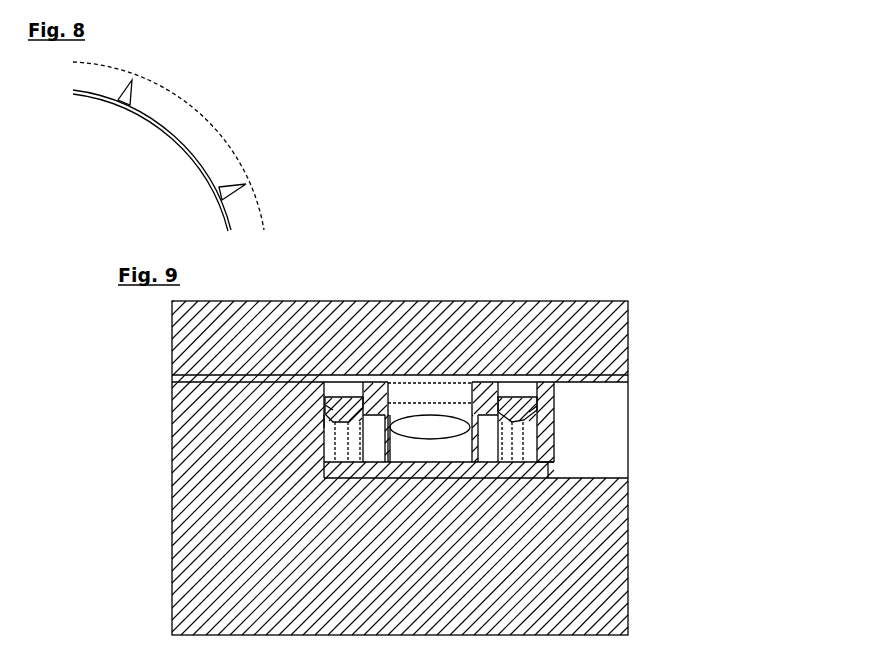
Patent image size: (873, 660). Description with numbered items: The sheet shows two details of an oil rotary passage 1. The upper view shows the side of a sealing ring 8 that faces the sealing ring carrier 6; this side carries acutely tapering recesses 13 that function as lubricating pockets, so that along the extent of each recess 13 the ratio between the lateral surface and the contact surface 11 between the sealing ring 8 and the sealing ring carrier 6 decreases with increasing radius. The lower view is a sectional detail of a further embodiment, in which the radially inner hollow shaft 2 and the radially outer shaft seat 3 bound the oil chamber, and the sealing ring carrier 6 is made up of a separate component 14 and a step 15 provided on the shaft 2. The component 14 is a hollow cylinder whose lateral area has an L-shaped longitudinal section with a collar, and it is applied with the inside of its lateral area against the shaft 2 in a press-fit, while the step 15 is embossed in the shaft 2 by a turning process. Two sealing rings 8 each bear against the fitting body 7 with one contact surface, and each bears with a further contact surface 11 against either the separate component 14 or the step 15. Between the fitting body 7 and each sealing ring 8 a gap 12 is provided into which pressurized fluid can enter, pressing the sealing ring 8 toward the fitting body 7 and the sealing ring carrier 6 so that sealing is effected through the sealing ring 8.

In FIG. 9, the oil rotary passage 1 is at (622, 252).
In FIG. 9, the shaft 2 is at (607, 598).
In FIG. 9, the shaft seat 3 is at (598, 332).
In FIG. 9, the sealing ring carrier 6 is at (548, 468).
In FIG. 9, the fitting body 7 is at (482, 390).
In FIG. 8, the sealing ring 8 is at (193, 128).
In FIG. 9, the sealing ring 8 is at (337, 405).
In FIG. 9, the contact surface 11 is at (325, 405).
In FIG. 9, the gap 12 is at (352, 397).
In FIG. 8, the recess 13 is at (127, 95).
In FIG. 9, the separate component 14 is at (542, 428).
In FIG. 9, the step 15 is at (324, 423).